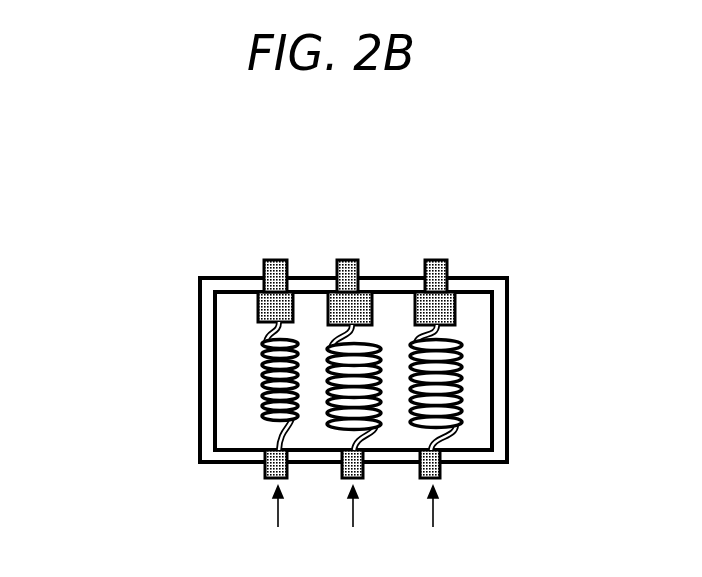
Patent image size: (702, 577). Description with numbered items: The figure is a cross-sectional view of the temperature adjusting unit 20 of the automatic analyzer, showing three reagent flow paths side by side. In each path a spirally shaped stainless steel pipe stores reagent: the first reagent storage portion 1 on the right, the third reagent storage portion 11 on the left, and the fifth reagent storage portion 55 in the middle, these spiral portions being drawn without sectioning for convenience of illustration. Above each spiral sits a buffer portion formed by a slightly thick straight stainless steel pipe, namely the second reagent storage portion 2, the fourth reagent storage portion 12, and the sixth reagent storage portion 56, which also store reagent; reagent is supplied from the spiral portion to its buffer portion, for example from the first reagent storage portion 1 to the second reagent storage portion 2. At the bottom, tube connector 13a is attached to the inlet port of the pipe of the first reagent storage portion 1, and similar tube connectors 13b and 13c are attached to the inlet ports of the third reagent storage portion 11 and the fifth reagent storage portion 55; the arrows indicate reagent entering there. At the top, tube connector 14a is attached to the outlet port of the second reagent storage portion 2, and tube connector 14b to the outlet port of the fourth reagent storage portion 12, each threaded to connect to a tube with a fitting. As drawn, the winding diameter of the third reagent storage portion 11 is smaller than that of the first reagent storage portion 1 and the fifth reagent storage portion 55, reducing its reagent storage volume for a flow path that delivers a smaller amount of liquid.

The temperature adjusting unit 20 is at (187, 97).
The fourth reagent storage portion 12 is at (240, 292).
The tube connector 14a is at (272, 260).
The tube connector 14b is at (348, 260).
The sixth reagent storage portion 56 is at (326, 308).
The second reagent storage portion 2 is at (457, 337).
The first reagent storage portion 1 is at (452, 344).
The third reagent storage portion 11 is at (264, 392).
The tube connector 13c is at (253, 480).
The tube connector 13b is at (362, 480).
The tube connector 13a is at (442, 478).
The fifth reagent storage portion 55 is at (328, 424).